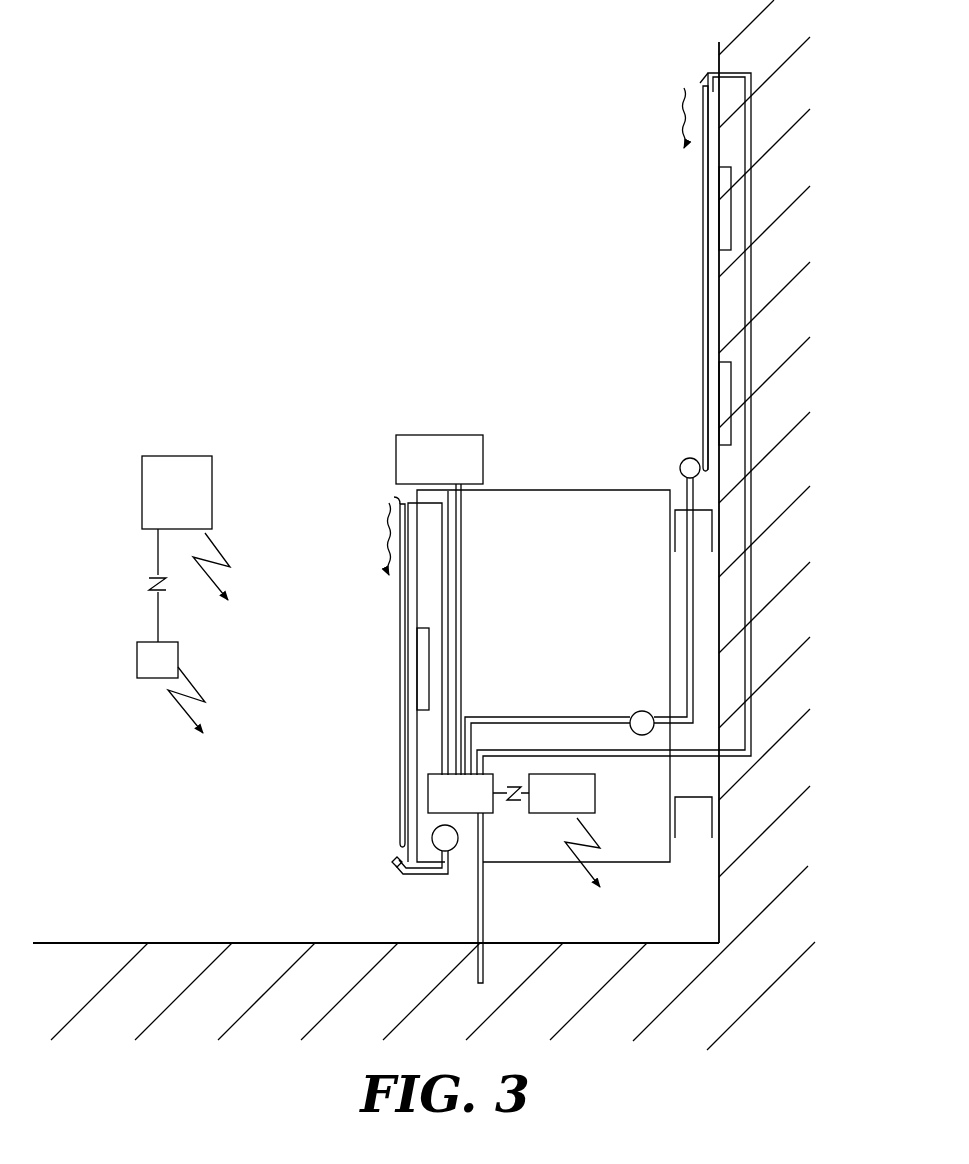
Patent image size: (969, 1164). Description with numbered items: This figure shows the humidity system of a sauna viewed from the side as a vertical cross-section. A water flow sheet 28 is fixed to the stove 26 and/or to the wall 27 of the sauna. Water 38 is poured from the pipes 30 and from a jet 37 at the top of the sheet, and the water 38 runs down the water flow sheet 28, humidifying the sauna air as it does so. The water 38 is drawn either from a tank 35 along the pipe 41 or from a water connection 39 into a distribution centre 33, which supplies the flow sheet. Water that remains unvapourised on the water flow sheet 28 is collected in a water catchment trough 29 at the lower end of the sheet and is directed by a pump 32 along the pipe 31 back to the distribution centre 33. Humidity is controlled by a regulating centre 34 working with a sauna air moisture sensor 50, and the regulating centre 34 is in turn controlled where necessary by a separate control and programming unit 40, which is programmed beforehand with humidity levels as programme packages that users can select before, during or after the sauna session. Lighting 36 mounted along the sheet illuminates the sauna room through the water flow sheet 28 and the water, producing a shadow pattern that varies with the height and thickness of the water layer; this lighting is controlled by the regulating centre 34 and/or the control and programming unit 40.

The stove 26 is at (570, 490).
The wall 27 is at (720, 892).
The water flow sheet 28 is at (703, 264).
The water catchment trough 29 is at (688, 458).
The pipe 30 is at (751, 259).
The pipe 31 is at (687, 577).
The pump 32 is at (640, 711).
The distribution centre 33 is at (481, 813).
The regulating centre 34 is at (596, 799).
The tank 35 is at (425, 440).
The lighting 36 is at (731, 194).
The jet 37 is at (701, 82).
The water 38 is at (684, 132).
The water connection 39 is at (485, 900).
The control and programming unit 40 is at (178, 466).
The pipe 41 is at (462, 584).
The moisture sensor 50 is at (150, 679).